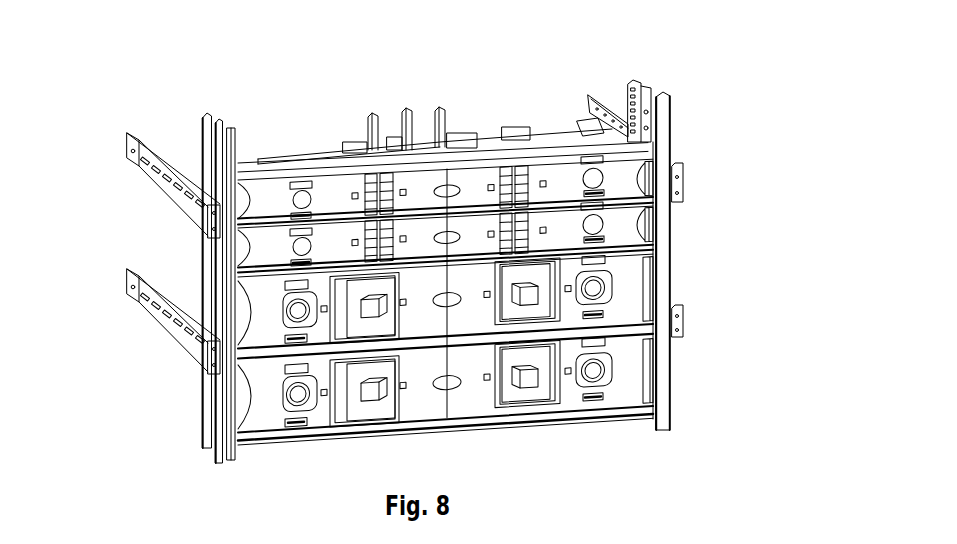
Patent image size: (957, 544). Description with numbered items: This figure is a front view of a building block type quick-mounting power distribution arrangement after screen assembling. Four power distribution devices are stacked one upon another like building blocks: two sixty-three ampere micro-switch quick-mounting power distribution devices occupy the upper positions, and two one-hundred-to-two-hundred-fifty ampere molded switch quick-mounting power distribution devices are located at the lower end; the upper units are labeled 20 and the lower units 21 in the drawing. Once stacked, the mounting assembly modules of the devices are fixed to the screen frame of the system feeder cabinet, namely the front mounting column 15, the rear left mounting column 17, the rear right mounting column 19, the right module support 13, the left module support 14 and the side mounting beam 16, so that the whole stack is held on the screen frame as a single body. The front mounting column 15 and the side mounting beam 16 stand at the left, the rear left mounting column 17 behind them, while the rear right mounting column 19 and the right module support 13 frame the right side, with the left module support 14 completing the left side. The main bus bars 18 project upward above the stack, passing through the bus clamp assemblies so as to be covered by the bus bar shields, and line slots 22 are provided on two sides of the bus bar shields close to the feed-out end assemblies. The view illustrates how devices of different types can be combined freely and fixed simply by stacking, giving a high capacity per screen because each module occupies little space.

The right module support 13 is at (647, 392).
The left module support 14 is at (222, 440).
The front mounting column 15 is at (133, 292).
The side mounting beam 16 is at (148, 180).
The rear left mounting column 17 is at (212, 150).
The main bus bars 18 is at (407, 113).
The rear right mounting column 19 is at (657, 83).
The upper equipment unit 20 is at (617, 180).
The lower equipment unit 21 is at (628, 287).
The line slots 22 is at (520, 133).